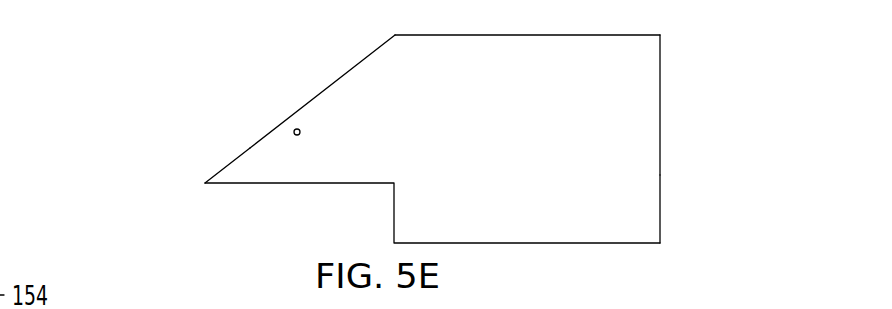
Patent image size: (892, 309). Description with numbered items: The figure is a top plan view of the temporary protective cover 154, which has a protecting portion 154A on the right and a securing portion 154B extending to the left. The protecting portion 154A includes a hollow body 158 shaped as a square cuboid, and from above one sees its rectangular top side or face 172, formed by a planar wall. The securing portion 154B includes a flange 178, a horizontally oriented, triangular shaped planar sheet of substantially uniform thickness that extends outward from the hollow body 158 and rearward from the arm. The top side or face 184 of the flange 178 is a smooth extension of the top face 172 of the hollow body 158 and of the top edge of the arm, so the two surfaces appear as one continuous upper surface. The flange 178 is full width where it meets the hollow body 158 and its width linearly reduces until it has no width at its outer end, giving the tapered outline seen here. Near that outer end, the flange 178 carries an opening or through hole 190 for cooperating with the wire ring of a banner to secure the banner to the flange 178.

The temporary protective cover 154 is at (173, 82).
The protecting portion 154A is at (661, 108).
The securing portion 154B is at (335, 82).
The body 158 is at (661, 175).
The top side or face 172 is at (552, 141).
The flange 178 is at (228, 165).
The top side or face of the flange 184 is at (377, 143).
The opening or through hole 190 is at (294, 129).